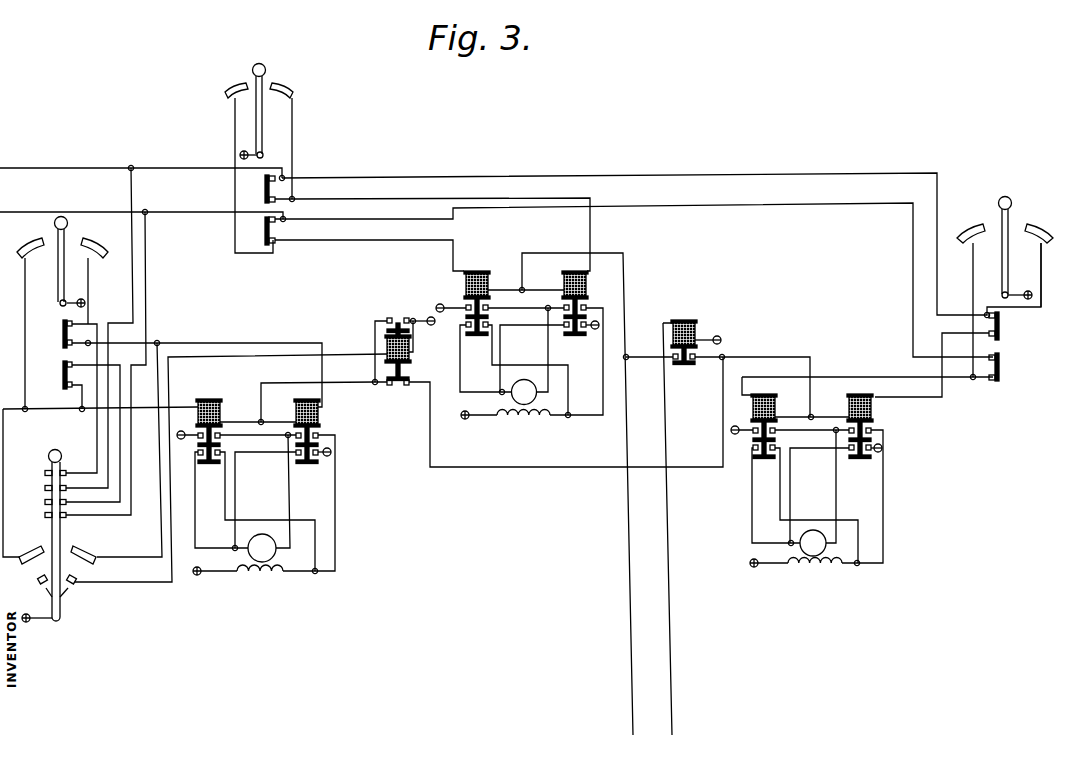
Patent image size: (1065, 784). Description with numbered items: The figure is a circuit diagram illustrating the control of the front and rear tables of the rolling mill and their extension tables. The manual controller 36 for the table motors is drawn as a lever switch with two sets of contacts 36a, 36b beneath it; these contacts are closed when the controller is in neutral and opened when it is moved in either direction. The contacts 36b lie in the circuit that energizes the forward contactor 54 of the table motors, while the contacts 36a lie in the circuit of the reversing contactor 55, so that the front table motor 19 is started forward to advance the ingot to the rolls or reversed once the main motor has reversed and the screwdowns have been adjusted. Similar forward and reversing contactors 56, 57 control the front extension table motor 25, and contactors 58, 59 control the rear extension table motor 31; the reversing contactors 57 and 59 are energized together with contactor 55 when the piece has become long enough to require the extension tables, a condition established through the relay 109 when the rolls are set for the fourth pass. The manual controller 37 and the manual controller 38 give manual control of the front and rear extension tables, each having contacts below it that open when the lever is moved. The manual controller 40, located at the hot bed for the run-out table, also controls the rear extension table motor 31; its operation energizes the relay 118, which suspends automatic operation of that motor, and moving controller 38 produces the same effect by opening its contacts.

The manual controller for the table motors 36 is at (325, 138).
The contacts of the controller 36 36a is at (276, 197).
The contacts of the controller 36 36b is at (276, 240).
The manual controller for the front extension table 37 is at (965, 282).
The manual controller for the rear extension table 38 is at (122, 289).
The manual controller for the rear extension table (run-out table) 40 is at (105, 541).
The forward contactor of the table motors 54 is at (464, 283).
The reversing contactor of the table motors 55 is at (588, 283).
The forward contactor of the front extension table motor 56 is at (776, 400).
The reversing contactor of the front extension table motor 57 is at (872, 408).
The forward contactor of the rear extension table motor 58 is at (221, 406).
The reversing contactor of the rear extension table motor 59 is at (319, 413).
The relay 109 is at (737, 332).
The relay 118 is at (409, 349).
The front table motor 19 is at (515, 416).
The rear extension table motor 31 is at (262, 573).
The front extension table motor 25 is at (811, 566).